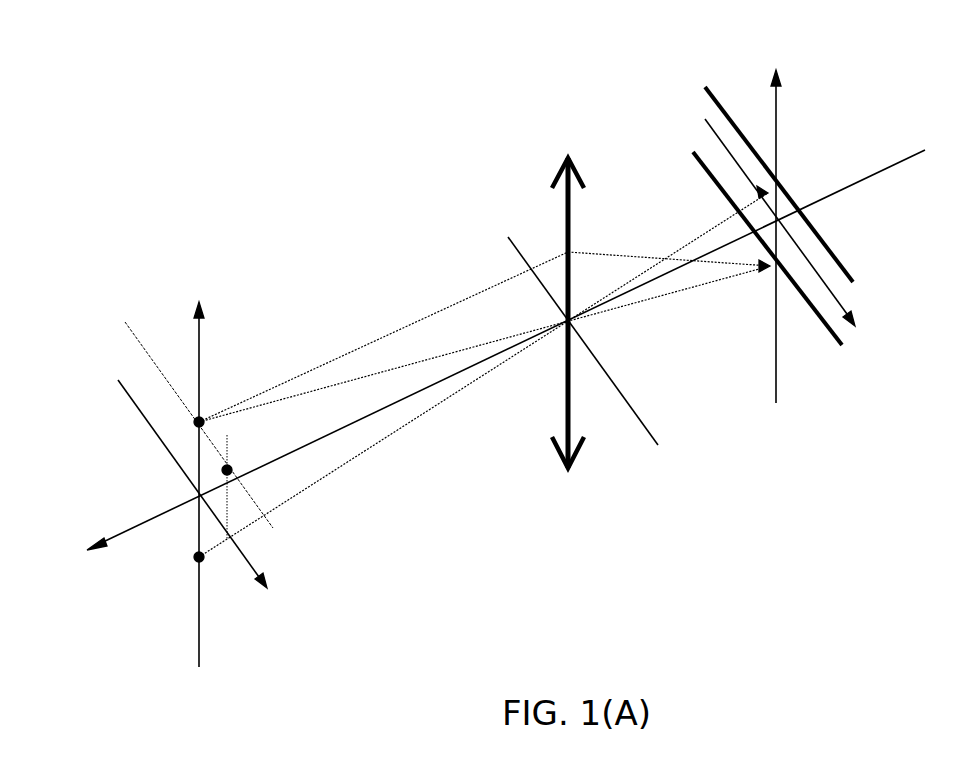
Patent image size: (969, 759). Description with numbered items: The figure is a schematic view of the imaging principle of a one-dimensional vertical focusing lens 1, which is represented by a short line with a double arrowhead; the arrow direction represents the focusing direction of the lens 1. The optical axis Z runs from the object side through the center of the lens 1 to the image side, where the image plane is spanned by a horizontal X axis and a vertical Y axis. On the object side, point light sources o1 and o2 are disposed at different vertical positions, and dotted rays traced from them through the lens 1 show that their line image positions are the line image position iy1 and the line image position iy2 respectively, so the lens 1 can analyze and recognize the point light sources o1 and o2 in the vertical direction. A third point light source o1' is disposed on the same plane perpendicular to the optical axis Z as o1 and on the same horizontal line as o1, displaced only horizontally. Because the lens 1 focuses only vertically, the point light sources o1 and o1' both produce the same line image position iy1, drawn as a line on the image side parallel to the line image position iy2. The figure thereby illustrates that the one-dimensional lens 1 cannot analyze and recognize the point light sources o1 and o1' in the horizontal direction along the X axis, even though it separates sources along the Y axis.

The 1D vertical focusing lens 1 is at (563, 218).
The point light source o1 is at (482, 339).
The point light source o2 is at (193, 563).
The point light source o1' is at (336, 523).
The line image position iy1 is at (779, 274).
The line image position iy2 is at (795, 184).
The optical axis Z is at (485, 367).
The X axis X is at (797, 239).
The Y axis Y is at (775, 217).